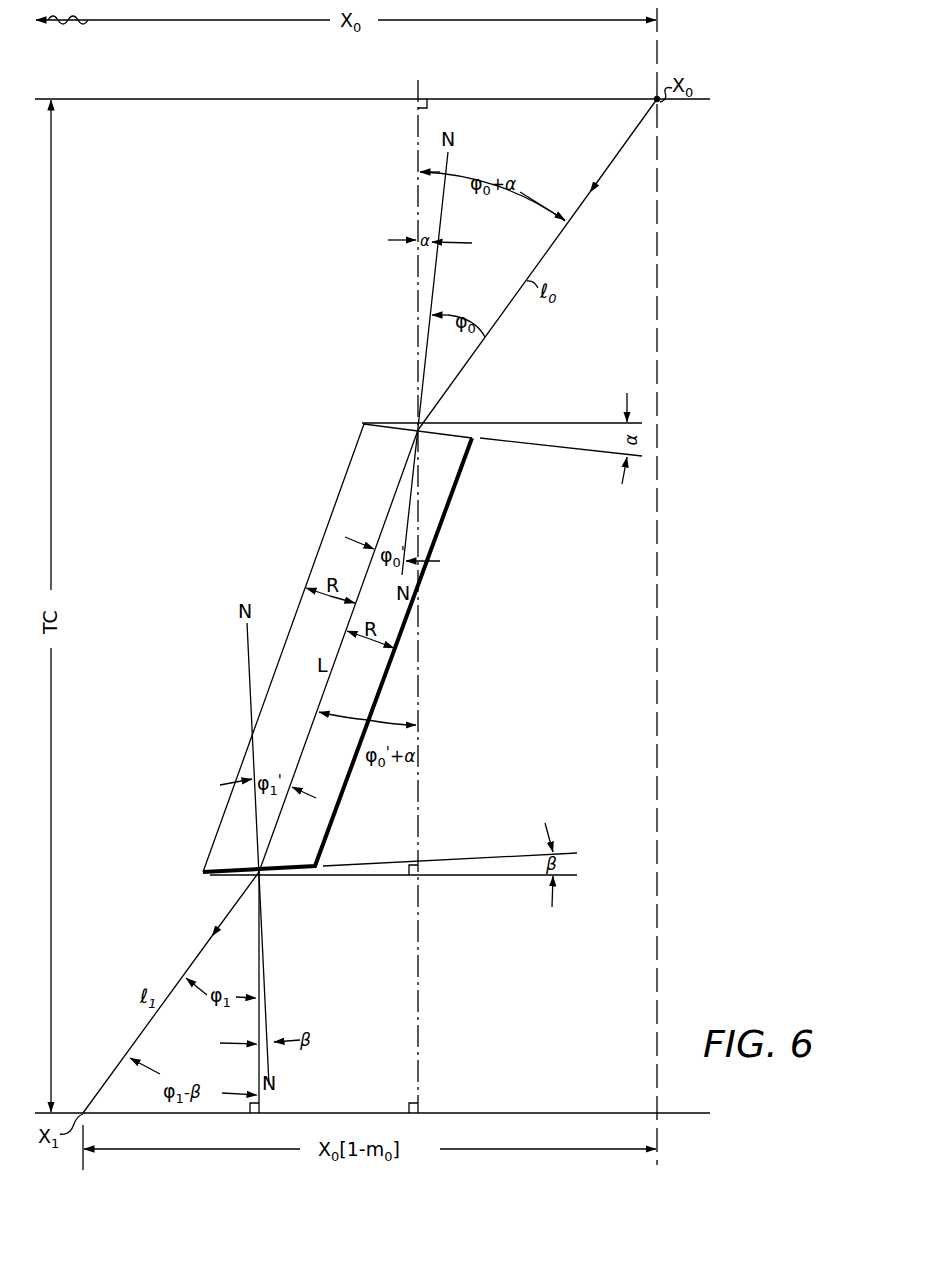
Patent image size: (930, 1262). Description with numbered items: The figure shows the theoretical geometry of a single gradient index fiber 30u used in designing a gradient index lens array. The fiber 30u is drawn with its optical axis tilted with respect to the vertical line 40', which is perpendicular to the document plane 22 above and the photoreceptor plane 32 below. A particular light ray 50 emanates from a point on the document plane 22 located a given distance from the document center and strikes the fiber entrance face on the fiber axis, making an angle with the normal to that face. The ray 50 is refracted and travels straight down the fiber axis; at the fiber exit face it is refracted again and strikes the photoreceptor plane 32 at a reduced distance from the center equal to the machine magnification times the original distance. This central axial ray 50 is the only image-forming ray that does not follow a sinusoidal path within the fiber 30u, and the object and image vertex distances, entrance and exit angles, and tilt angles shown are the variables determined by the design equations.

The document plane 22 is at (178, 99).
The photoreceptor plane 32 is at (553, 1113).
The vertical line 40' is at (391, 596).
The light ray 50 is at (630, 160).
The gradient index fiber 30u is at (437, 522).